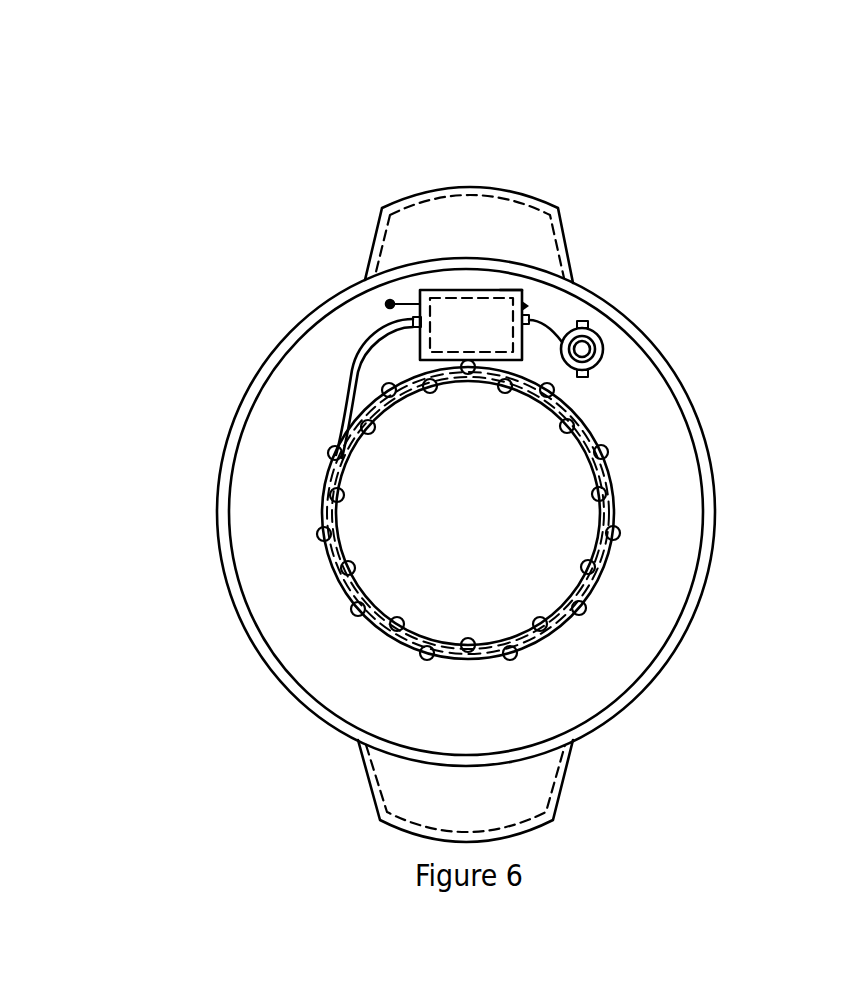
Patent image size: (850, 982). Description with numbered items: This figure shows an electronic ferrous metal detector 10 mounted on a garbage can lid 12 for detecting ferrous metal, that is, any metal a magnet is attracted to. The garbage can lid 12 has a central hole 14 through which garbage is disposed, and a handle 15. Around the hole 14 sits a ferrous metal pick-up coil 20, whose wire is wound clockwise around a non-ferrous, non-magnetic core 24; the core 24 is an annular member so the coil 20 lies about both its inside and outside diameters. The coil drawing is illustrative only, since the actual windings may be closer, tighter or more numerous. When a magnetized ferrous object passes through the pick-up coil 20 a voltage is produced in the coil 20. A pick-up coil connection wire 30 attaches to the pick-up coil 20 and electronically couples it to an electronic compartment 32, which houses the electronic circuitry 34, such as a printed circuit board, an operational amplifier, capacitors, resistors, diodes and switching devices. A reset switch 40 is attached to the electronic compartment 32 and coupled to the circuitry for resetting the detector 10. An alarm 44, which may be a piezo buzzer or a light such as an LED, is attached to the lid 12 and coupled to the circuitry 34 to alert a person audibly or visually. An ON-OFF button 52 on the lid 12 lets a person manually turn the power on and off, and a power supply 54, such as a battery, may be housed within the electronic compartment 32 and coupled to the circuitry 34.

The electronic ferrous metal detector 10 is at (346, 163).
The garbage can lid 12 is at (588, 695).
The hole 14 is at (503, 510).
The handle 15 is at (568, 237).
The ferrous metal pick-up coil 20 is at (590, 596).
The non-ferrous, non-magnetic core 24 is at (592, 441).
The pick-up coil connection wire 30 is at (363, 343).
The electronic compartment 32 is at (492, 290).
The electronic circuitry 34 is at (450, 313).
The reset switch 40 is at (388, 302).
The alarm 44 is at (604, 349).
The ON-OFF button 52 is at (528, 306).
The power supply 54 is at (517, 291).